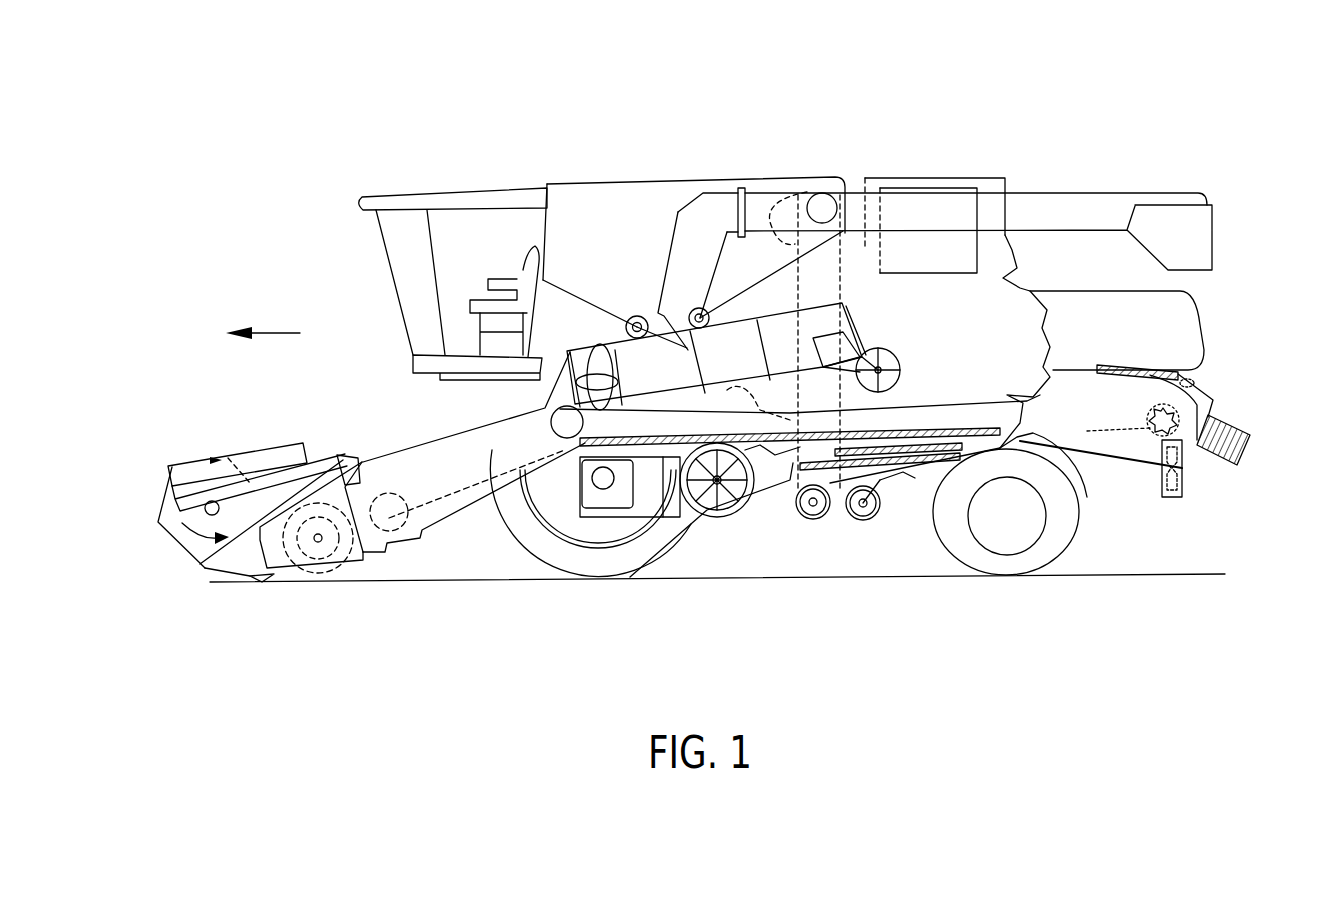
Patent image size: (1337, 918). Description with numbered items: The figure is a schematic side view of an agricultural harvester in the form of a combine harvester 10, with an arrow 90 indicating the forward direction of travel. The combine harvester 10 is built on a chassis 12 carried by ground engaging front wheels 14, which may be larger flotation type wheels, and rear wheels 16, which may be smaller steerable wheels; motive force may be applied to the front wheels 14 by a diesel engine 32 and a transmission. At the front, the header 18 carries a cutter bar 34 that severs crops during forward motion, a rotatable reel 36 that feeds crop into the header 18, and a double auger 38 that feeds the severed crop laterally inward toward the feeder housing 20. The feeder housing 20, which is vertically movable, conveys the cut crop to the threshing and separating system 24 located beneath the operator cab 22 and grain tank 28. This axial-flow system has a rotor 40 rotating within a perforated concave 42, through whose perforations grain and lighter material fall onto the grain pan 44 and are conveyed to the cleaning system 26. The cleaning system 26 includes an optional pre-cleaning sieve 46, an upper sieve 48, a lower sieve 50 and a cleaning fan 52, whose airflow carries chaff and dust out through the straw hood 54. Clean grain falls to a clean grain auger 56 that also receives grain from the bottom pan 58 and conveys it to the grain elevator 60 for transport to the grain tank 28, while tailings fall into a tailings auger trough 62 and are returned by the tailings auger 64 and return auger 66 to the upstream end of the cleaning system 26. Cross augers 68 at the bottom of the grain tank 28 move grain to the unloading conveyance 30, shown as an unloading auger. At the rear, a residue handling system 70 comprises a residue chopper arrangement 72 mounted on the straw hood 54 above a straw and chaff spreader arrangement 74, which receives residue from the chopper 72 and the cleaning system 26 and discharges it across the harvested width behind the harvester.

The combine harvester 10 is at (445, 170).
The chassis 12 is at (1089, 490).
The front wheels 14 is at (520, 547).
The rear wheels 16 is at (1077, 528).
The header 18 is at (240, 432).
The feeder housing 20 is at (427, 445).
The operator cab 22 is at (376, 266).
The threshing and separating system 24 is at (510, 401).
The cleaning system 26 is at (766, 540).
The grain tank 28 is at (593, 182).
The unloading conveyance 30 is at (1085, 200).
The diesel engine 32 is at (920, 186).
The cutter bar 34 is at (272, 575).
The rotatable reel 36 is at (163, 498).
The double auger 38 is at (322, 560).
The rotor 40 is at (586, 365).
The perforated concave 42 is at (754, 336).
The grain pan 44 is at (573, 465).
The pre-cleaning sieve 46 is at (843, 437).
The upper sieve 48 is at (940, 433).
The lower sieve 50 is at (903, 472).
The cleaning fan 52 is at (727, 520).
The straw hood 54 is at (1185, 328).
The clean grain auger 56 is at (815, 522).
The bottom pan 58 is at (935, 452).
The grain elevator 60 is at (845, 280).
The tailings auger trough 62 is at (930, 468).
The tailings auger 64 is at (855, 530).
The return auger 66 is at (813, 384).
The cross augers 68 is at (636, 316).
The residue handling system 70 is at (1228, 385).
The residue chopper arrangement 72 is at (1138, 395).
The straw and chaff spreader arrangement 74 is at (1212, 485).
The forward direction of travel 90 is at (270, 333).